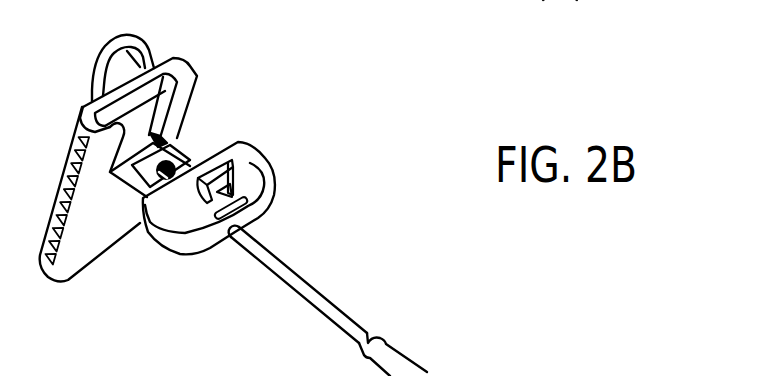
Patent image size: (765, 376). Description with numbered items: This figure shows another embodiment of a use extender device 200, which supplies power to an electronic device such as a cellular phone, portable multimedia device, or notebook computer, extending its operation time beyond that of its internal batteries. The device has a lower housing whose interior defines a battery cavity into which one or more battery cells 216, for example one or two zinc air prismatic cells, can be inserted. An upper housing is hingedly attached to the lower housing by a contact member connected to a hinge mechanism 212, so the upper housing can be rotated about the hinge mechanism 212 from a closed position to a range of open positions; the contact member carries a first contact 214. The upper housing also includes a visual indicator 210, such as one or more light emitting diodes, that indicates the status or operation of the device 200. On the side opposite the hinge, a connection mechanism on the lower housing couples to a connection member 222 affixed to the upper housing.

The use extender device 200 is at (281, 46).
The visual indicator 210 is at (248, 204).
The hinge mechanism 212 is at (152, 142).
The first contact 214 is at (197, 162).
The battery cells 216 is at (161, 62).
The connection member 222 is at (233, 161).